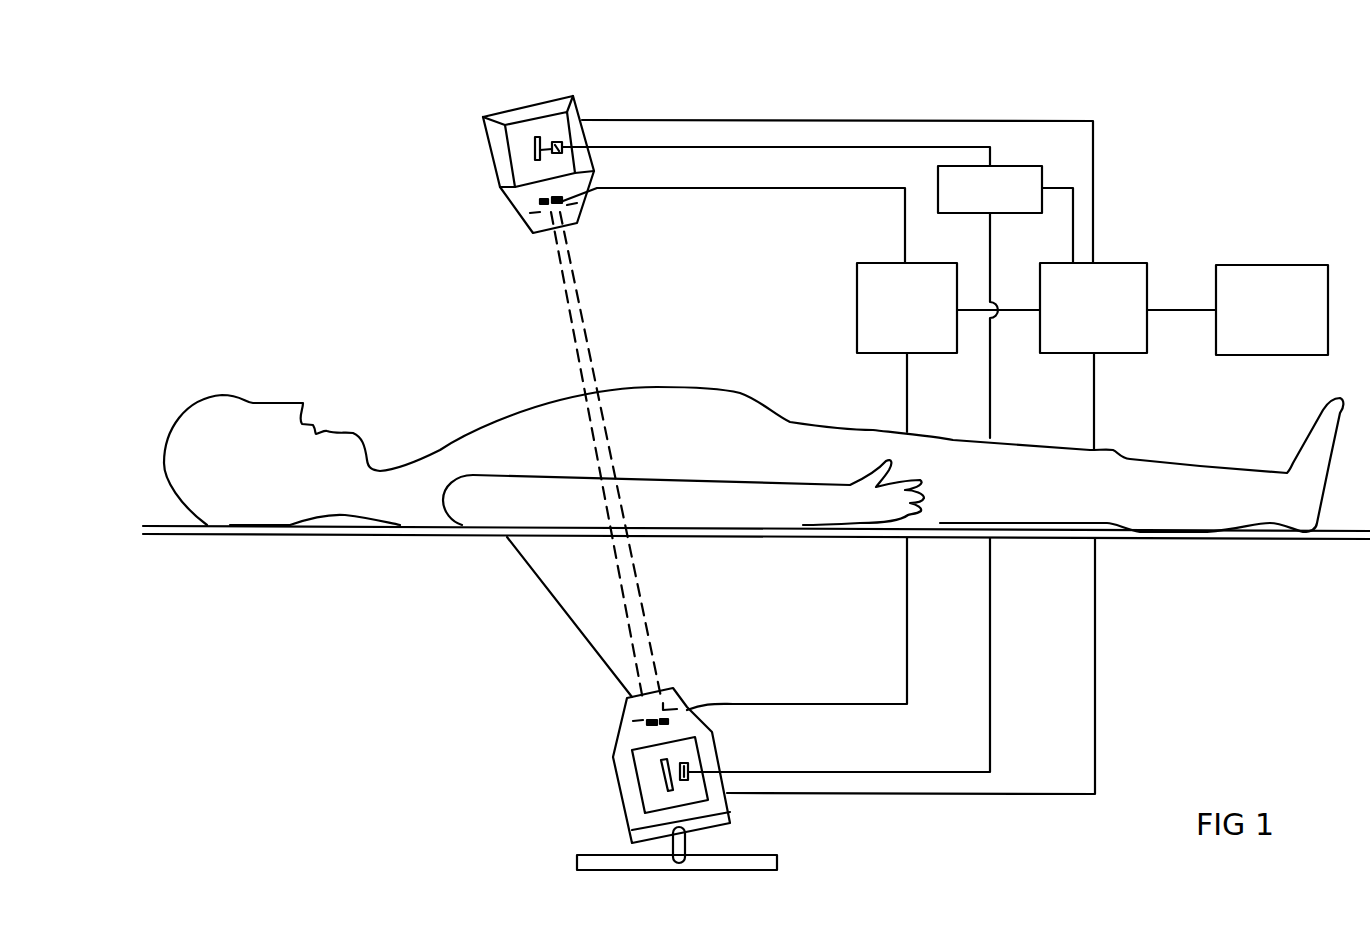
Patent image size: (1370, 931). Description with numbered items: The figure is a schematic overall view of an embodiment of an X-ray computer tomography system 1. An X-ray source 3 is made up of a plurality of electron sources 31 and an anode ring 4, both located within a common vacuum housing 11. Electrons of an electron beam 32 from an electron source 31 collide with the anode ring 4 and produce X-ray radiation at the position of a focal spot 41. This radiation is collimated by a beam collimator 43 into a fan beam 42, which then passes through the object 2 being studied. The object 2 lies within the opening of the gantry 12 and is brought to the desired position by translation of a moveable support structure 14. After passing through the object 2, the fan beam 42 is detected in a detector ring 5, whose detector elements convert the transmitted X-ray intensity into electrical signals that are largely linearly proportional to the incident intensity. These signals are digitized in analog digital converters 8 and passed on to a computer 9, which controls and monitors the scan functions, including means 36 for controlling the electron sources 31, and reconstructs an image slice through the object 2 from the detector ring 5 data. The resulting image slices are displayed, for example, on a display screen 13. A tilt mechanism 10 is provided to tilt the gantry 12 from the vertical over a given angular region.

The X-ray computer tomography system 1 is at (978, 102).
The object 2 is at (680, 387).
The X-ray source 3 is at (687, 767).
The anode ring 4 is at (537, 137).
The detector ring 5 is at (647, 722).
The analog digital converters 8 is at (907, 308).
The computer 9 is at (1093, 308).
The tilt mechanism 10 is at (777, 860).
The vacuum housing 11 is at (497, 118).
The gantry 12 is at (440, 450).
The display screen 13 is at (1272, 310).
The moveable support structure 14 is at (1208, 540).
The electron sources 31 is at (557, 147).
The electron beam 32 is at (543, 145).
The means for controlling the electron sources 36 is at (990, 189).
The focal spot 41 is at (540, 153).
The fan beam 42 is at (620, 577).
The beam collimator 43 is at (547, 199).